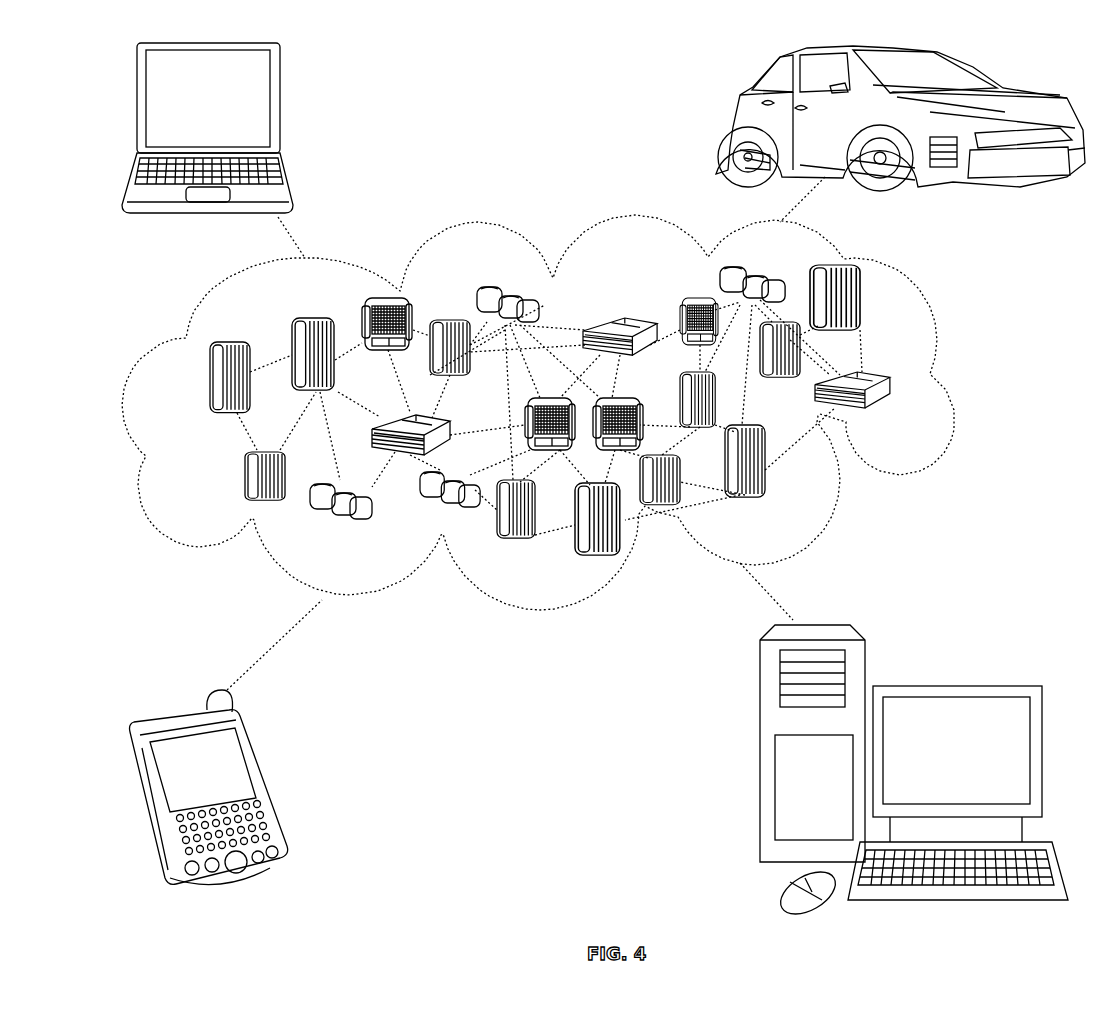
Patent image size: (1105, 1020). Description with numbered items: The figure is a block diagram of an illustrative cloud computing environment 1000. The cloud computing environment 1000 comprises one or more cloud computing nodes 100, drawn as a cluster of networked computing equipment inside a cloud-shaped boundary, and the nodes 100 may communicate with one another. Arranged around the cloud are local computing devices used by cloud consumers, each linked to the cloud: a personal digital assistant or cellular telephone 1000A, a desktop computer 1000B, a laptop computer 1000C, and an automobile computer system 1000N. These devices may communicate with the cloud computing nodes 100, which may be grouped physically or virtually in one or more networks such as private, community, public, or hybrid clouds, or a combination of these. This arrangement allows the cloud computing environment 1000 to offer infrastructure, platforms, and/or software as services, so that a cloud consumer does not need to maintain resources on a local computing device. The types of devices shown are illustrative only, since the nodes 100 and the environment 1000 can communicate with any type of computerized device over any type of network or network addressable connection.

The cloud computing nodes 100 is at (893, 417).
The cloud computing environment 1000 is at (956, 391).
The personal digital assistant (PDA) or cellular telephone 1000A is at (268, 785).
The desktop computer 1000B is at (952, 682).
The laptop computer 1000C is at (282, 107).
The automobile computer system 1000N is at (727, 125).